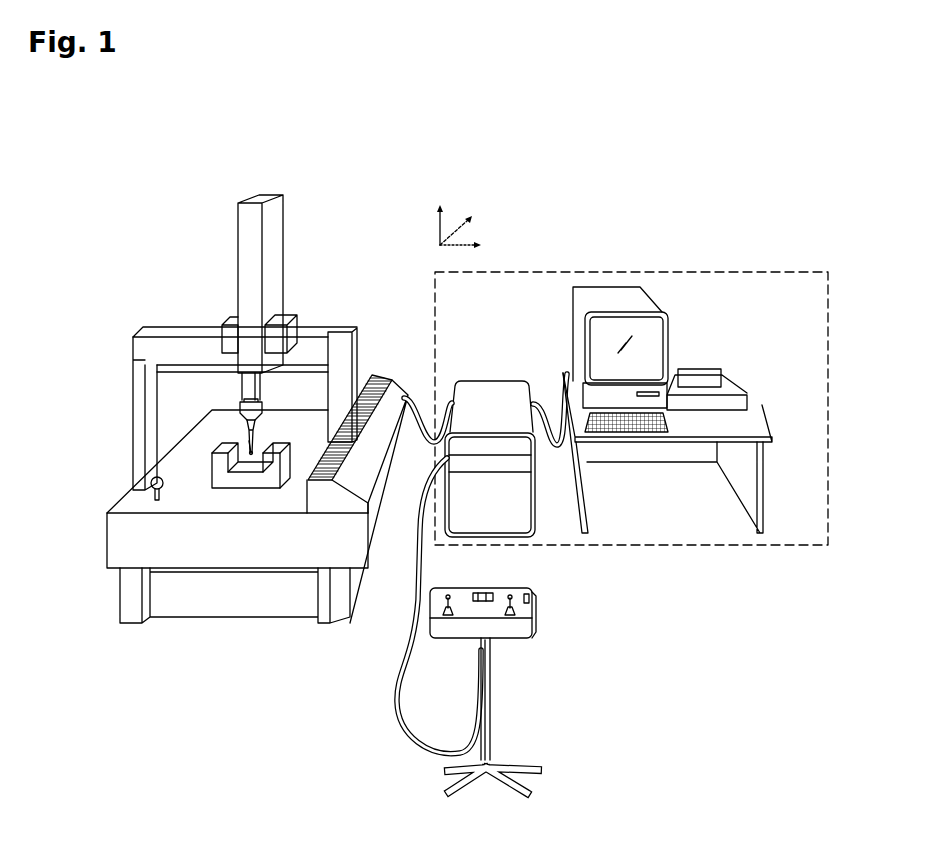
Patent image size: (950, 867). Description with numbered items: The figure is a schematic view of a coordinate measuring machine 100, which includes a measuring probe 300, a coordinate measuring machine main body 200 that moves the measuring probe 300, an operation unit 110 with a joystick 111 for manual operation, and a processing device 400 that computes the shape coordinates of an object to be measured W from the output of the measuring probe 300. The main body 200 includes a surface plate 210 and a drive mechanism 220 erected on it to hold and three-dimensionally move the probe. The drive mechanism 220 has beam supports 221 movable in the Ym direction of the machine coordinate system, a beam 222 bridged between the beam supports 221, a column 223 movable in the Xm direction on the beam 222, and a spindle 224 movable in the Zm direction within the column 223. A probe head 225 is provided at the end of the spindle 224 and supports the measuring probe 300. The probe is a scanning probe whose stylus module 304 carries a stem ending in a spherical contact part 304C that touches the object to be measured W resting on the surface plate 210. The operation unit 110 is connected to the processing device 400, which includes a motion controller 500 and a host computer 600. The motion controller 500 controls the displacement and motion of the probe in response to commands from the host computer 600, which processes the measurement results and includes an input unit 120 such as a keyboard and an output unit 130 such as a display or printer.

The coordinate measuring machine 100 is at (364, 208).
The operation unit 110 is at (544, 660).
The joystick 111 is at (510, 596).
The input unit 120 is at (632, 425).
The output unit 130 is at (661, 333).
The coordinate measuring machine main body 200 is at (104, 284).
The surface plate 210 is at (108, 541).
The drive mechanism 220 is at (66, 756).
The beam supports 221 is at (133, 386).
The beam 222 is at (155, 337).
The column 223 is at (255, 273).
The spindle 224 is at (243, 384).
The probe head 225 is at (243, 407).
The measuring probe 300 is at (272, 416).
The stylus module 304 is at (249, 441).
The spherical contact part 304C is at (258, 452).
The processing device 400 is at (760, 272).
The motion controller 500 is at (493, 388).
The host computer 600 is at (662, 642).
The object to be measured W is at (212, 471).